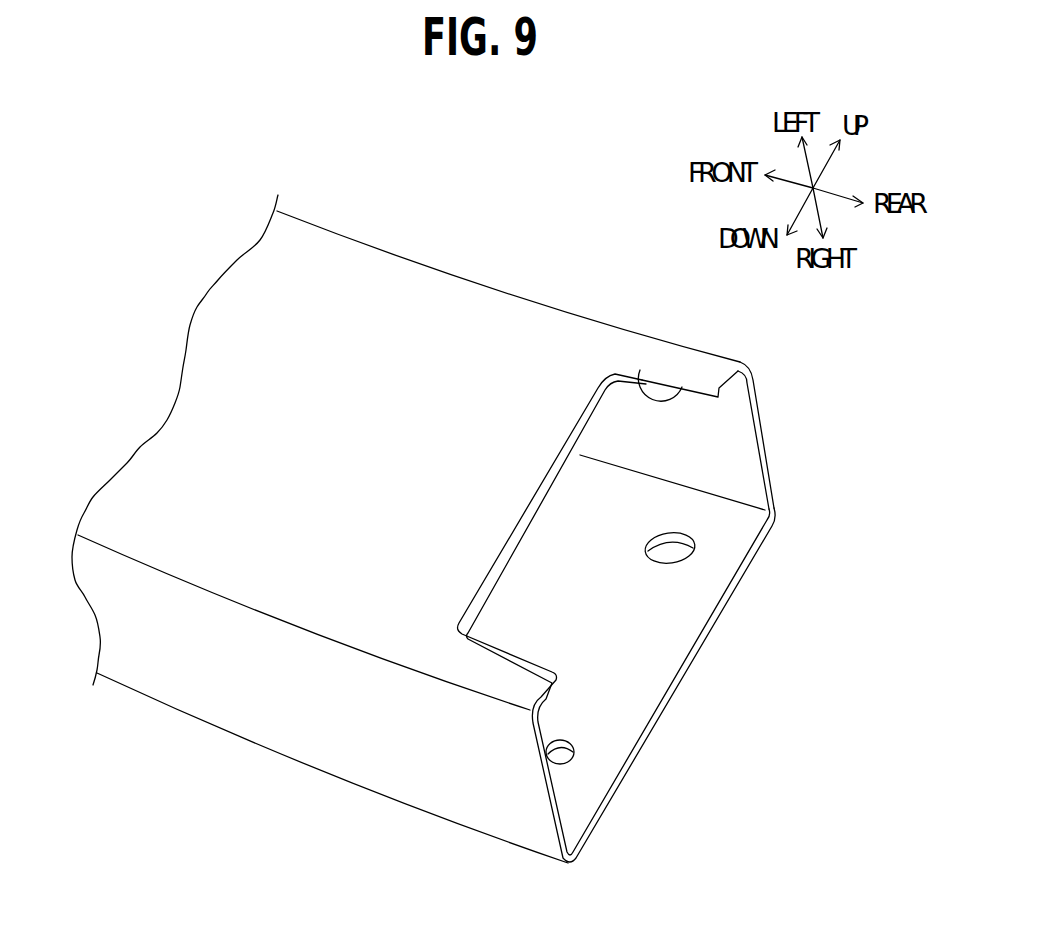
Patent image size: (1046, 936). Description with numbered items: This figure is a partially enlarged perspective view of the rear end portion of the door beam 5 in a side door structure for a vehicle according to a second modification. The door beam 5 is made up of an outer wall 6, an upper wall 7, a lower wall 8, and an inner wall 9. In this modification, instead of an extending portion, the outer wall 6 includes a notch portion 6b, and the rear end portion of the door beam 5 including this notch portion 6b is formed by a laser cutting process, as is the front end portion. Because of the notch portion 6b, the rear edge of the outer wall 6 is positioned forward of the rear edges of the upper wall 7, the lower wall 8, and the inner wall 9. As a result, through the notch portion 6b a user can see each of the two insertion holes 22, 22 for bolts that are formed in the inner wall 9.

The door beam 5 is at (519, 258).
The outer wall 6 is at (385, 302).
The notch portion 6b is at (642, 380).
The upper wall 7 is at (732, 442).
The lower wall 8 is at (313, 728).
The inner wall 9 is at (645, 653).
The insertion hole 22 is at (665, 560).